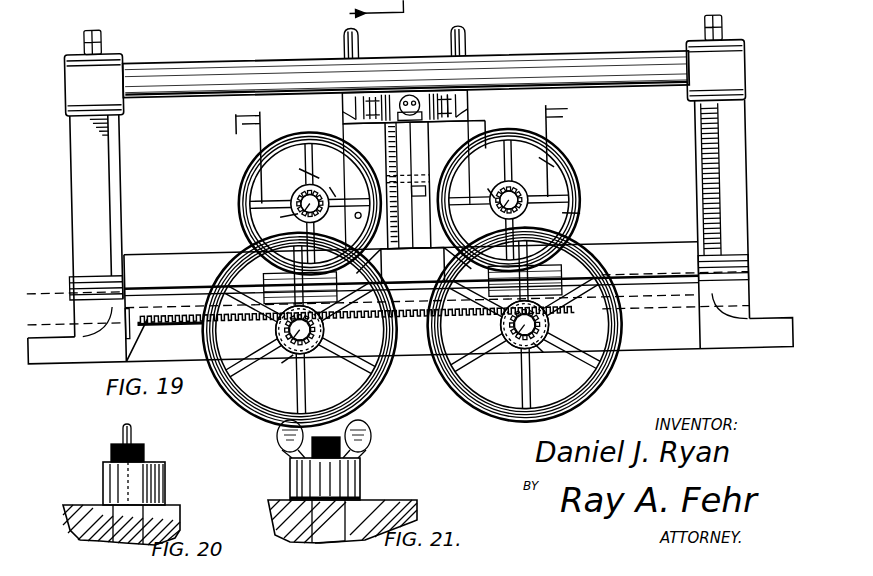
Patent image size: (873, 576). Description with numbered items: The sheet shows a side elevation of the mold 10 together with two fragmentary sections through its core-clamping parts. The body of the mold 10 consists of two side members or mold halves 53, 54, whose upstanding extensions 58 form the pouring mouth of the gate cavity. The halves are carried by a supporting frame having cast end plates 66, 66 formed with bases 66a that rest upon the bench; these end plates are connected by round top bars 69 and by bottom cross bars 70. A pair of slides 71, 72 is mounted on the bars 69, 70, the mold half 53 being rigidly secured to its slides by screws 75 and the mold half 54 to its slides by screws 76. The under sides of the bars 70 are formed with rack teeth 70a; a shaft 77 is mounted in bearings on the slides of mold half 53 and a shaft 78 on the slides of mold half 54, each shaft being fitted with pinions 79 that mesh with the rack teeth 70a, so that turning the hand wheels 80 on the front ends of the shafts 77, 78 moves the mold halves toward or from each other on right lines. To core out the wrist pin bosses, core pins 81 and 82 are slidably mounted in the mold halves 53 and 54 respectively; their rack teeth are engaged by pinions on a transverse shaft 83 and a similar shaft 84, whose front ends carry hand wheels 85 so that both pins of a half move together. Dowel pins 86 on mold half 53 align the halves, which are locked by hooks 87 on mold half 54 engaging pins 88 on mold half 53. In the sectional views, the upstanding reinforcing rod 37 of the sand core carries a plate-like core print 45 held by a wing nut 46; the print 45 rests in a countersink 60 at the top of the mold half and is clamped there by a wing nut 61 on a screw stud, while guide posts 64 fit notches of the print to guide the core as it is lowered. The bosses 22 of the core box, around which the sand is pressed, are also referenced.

In FIG. 19, the mold 10 is at (750, 174).
In FIG. 19, the boss 22 is at (364, 11).
In FIG. 19, the upstanding rod 37 is at (426, 95).
In FIG. 19, the core print 45 is at (373, 92).
In FIG. 20, the core print 45 is at (76, 506).
In FIG. 21, the core print 45 is at (398, 500).
In FIG. 19, the wing nut 46 is at (400, 92).
In FIG. 19, the mold half 53 is at (394, 240).
In FIG. 19, the mold half 54 is at (422, 240).
In FIG. 20, the mold half 54 is at (68, 505).
In FIG. 21, the mold half 54 is at (270, 515).
In FIG. 19, the upstanding extension 58 is at (448, 94).
In FIG. 21, the countersink 60 is at (297, 540).
In FIG. 19, the wing nut 61 is at (346, 57).
In FIG. 20, the wing nut 61 is at (166, 483).
In FIG. 21, the wing nut 61 is at (292, 481).
In FIG. 19, the guide post 64 is at (352, 35).
In FIG. 19, the end plate 66 is at (75, 177).
In FIG. 19, the base 66a is at (43, 345).
In FIG. 19, the top bar 69 is at (180, 65).
In FIG. 19, the bottom cross bar 70 is at (160, 288).
In FIG. 19, the rack teeth 70a is at (185, 320).
In FIG. 19, the slide 71 is at (264, 124).
In FIG. 19, the slide 72 is at (542, 124).
In FIG. 19, the screw 75 is at (352, 186).
In FIG. 19, the screw 76 is at (470, 190).
In FIG. 19, the shaft 77 is at (278, 360).
In FIG. 19, the shaft 78 is at (540, 355).
In FIG. 19, the pinion 79 is at (325, 335).
In FIG. 19, the hand wheel 80 is at (386, 381).
In FIG. 19, the core pin 81 is at (300, 170).
In FIG. 19, the core pin 82 is at (555, 162).
In FIG. 19, the shaft 83 is at (280, 214).
In FIG. 19, the shaft 84 is at (580, 217).
In FIG. 19, the hand wheel 85 is at (243, 178).
In FIG. 19, the dowel pin 86 is at (408, 201).
In FIG. 19, the hook 87 is at (415, 180).
In FIG. 19, the pin 88 is at (345, 222).